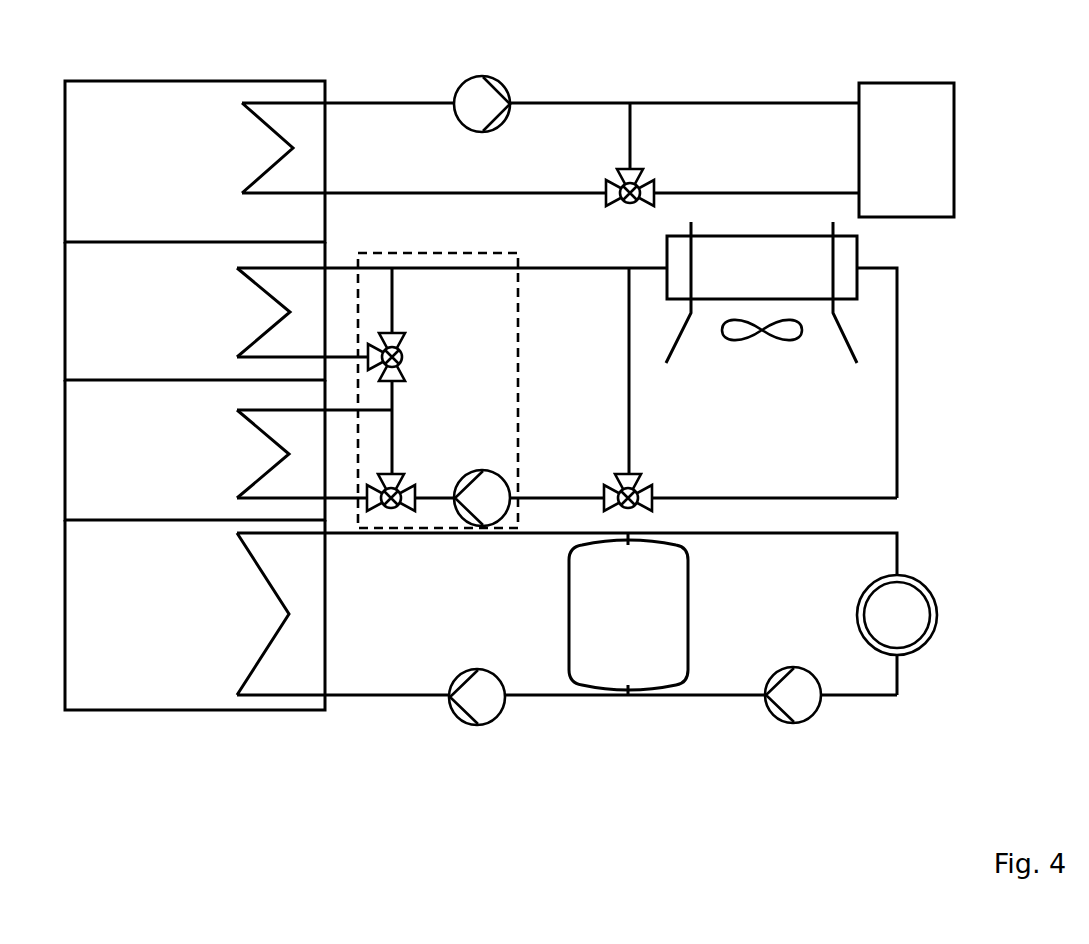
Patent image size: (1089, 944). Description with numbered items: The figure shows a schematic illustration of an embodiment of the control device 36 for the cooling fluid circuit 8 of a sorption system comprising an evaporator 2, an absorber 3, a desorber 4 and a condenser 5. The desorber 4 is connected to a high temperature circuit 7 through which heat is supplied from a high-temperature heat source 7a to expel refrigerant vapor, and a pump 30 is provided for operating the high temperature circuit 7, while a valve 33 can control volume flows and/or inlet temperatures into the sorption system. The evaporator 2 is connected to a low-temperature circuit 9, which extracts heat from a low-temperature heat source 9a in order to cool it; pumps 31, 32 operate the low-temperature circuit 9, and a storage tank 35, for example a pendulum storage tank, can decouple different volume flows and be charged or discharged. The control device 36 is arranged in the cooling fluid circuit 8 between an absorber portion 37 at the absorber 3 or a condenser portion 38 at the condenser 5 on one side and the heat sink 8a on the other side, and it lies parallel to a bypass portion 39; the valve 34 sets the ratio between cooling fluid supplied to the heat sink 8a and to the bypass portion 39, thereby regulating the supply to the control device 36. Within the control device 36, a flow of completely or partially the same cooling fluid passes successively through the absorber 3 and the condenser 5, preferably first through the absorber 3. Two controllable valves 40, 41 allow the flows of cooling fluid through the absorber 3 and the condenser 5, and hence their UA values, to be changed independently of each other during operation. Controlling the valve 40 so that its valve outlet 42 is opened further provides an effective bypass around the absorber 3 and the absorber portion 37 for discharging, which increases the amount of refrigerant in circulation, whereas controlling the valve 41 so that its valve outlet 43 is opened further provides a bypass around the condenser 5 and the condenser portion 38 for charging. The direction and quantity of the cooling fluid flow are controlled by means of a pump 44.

The evaporator 2 is at (195, 615).
The absorber 3 is at (195, 450).
The desorber 4 is at (195, 161).
The condenser 5 is at (195, 311).
The high temperature circuit 7 is at (680, 103).
The high-temperature heat source 7a is at (906, 150).
The cooling fluid circuit 8 is at (825, 497).
The heat sink 8a is at (761, 292).
The low-temperature circuit 9 is at (858, 695).
The low-temperature heat source 9a is at (897, 615).
The pump 30 is at (467, 82).
The pump 31 is at (463, 672).
The pump 32 is at (773, 673).
The valve 33 is at (606, 188).
The valve 34 is at (620, 477).
The storage tank 35 is at (628, 614).
The control device 36 is at (518, 385).
The absorber portion 37 is at (263, 474).
The condenser portion 38 is at (265, 330).
The bypass portion 39 is at (625, 393).
The controllable valve 40 is at (408, 496).
The controllable valve 41 is at (389, 329).
The valve outlet 42 is at (368, 505).
The valve outlet 43 is at (377, 347).
The pump 44 is at (500, 472).